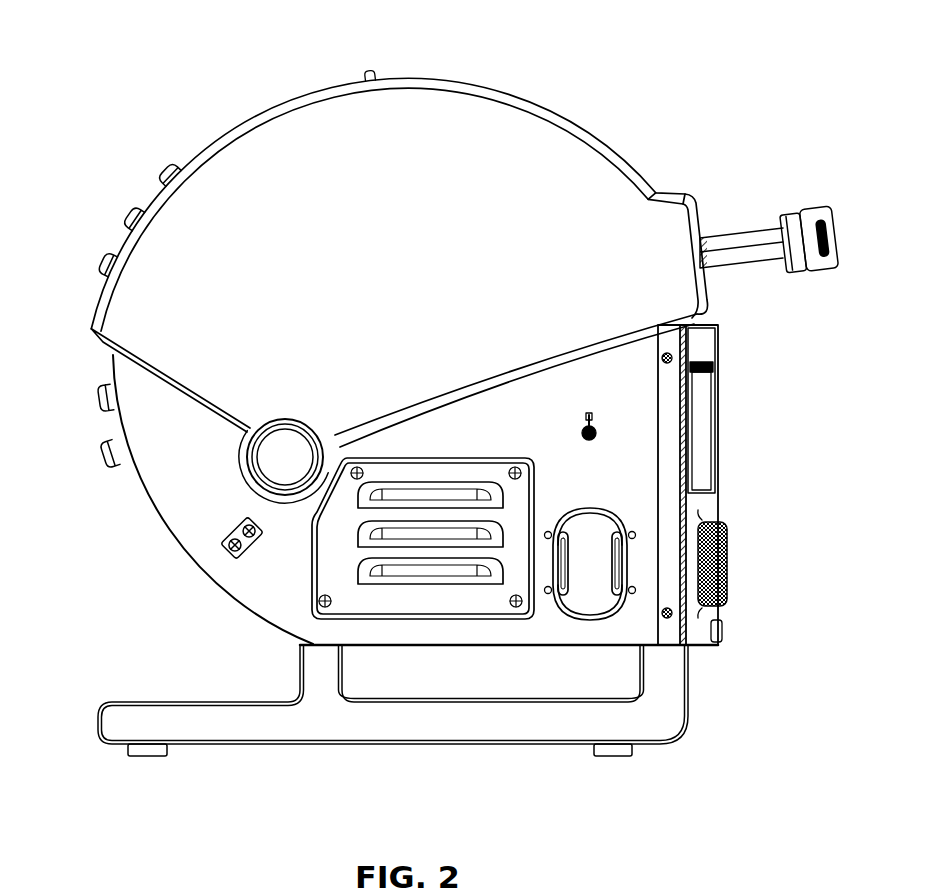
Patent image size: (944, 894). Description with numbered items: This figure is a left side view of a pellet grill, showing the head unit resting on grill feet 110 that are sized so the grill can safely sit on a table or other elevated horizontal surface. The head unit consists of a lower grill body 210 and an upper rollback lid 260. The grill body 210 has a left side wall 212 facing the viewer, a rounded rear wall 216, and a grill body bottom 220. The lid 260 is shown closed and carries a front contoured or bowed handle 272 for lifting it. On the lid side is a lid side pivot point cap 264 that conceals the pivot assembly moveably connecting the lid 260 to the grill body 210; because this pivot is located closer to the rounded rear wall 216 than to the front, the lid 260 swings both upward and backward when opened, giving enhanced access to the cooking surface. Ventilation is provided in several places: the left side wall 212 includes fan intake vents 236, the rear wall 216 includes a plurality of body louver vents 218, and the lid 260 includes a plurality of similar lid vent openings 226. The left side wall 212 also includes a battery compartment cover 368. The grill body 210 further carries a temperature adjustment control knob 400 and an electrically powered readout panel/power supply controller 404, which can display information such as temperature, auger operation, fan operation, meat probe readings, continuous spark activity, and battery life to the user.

The grill feet 110 is at (228, 736).
The lower grill body 210 is at (268, 582).
The left side wall 212 is at (182, 513).
The rounded rear wall 216 is at (110, 432).
The body louver vents 218 is at (115, 475).
The grill body bottom 220 is at (517, 650).
The lid vent openings 226 is at (97, 252).
The fan intake vents 236 is at (436, 470).
The upper rollback lid 260 is at (372, 80).
The lid side pivot point caps 264 is at (292, 448).
The front contoured handle 272 is at (810, 205).
The battery compartment cover 368 is at (578, 522).
The temperature adjustment control knob 400 is at (730, 546).
The readout panel/power supply controller 404 is at (708, 440).